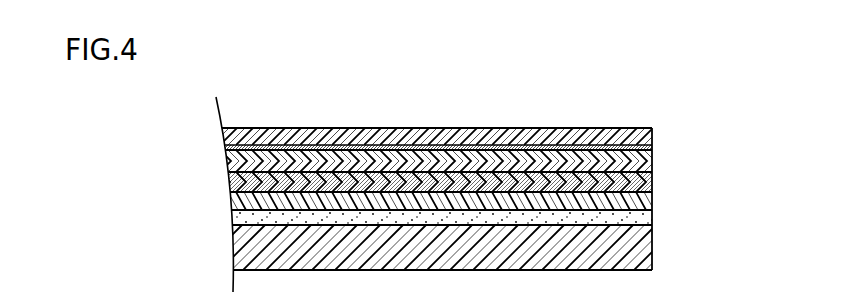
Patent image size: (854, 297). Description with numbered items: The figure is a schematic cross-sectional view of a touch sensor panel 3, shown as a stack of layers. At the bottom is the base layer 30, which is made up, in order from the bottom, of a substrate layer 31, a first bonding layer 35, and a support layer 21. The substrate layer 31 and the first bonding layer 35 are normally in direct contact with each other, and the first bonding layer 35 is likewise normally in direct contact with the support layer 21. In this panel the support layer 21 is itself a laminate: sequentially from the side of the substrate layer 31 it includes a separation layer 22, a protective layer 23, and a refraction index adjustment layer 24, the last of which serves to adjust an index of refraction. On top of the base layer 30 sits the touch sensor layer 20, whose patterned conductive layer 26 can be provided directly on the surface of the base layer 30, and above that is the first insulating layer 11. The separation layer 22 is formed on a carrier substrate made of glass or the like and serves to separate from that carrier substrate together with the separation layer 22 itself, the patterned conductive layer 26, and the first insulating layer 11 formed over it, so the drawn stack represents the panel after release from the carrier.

The TS panel 3 is at (687, 85).
The first insulating layer 11 is at (558, 128).
The touch sensor layer 20 is at (391, 137).
The patterned conductive layer 26 is at (223, 146).
The base layer 30 is at (125, 152).
The support layer 21 is at (161, 152).
The refraction index adjustment layer 24 is at (225, 160).
The protective layer 23 is at (229, 181).
The separation layer 22 is at (233, 201).
The first bonding layer 35 is at (235, 218).
The substrate layer 31 is at (235, 246).